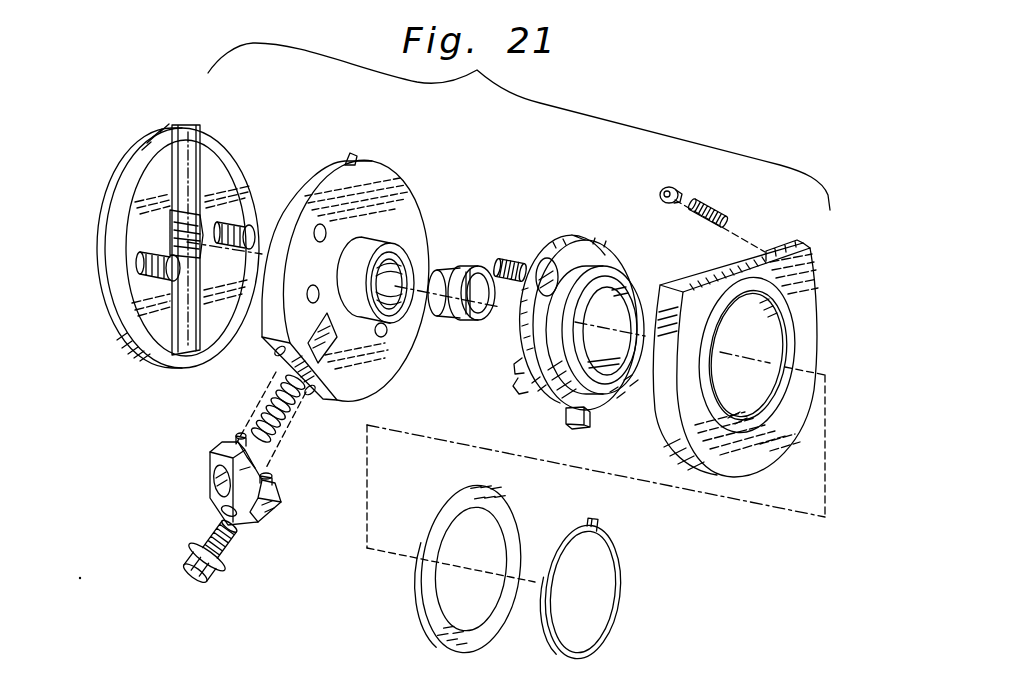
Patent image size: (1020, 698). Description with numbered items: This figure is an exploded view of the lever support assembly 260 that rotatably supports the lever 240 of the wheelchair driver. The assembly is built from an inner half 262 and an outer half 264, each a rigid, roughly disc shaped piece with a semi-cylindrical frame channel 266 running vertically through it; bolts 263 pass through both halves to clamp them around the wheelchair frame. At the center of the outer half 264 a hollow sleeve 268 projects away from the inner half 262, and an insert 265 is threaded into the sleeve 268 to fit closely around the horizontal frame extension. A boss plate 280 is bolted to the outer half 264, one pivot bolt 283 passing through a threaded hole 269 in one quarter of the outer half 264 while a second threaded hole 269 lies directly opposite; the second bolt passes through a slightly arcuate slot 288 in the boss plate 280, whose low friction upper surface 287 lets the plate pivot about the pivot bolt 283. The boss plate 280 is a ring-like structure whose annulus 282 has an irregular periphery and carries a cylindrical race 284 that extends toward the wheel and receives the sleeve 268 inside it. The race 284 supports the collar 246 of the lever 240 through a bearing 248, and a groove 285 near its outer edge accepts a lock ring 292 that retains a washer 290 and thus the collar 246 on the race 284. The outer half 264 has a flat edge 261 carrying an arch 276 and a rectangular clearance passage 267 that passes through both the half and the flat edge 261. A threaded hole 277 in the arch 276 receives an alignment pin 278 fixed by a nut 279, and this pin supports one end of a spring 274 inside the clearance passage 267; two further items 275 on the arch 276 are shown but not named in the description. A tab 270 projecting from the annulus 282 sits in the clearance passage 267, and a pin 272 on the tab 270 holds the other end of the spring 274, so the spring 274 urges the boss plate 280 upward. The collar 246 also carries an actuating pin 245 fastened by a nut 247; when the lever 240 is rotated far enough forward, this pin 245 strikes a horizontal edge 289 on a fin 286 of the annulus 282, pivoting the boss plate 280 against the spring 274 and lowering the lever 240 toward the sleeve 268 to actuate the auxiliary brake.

The lever 240 is at (812, 258).
The actuating pin 245 is at (703, 207).
The collar 246 is at (790, 430).
The nut 247 is at (672, 188).
The bearing 248 is at (792, 336).
The lever support assembly 260 is at (155, 85).
The flat edge 261 is at (273, 357).
The inner half 262 is at (114, 192).
The bolts 263 is at (167, 272).
The outer half 264 is at (387, 160).
The insert 265 is at (458, 272).
The semi-cylindrical frame channel 266 is at (187, 140).
The clearance passage 267 is at (337, 353).
The sleeve 268 is at (370, 258).
The threaded hole 269 is at (318, 232).
The tab 270 is at (518, 366).
The pin 272 is at (525, 388).
The spring 274 is at (286, 432).
The set screw 275 is at (210, 467).
The arch 276 is at (263, 520).
The threaded hole 277 is at (222, 513).
The alignment pin 278 is at (228, 535).
The nut 279 is at (184, 557).
The boss plate 280 is at (590, 262).
The annulus 282 is at (567, 252).
The pivot bolt 283 is at (506, 260).
The cylindrical race 284 is at (608, 262).
The groove 285 is at (537, 400).
The fin 286 is at (613, 398).
The low friction upper surface 287 is at (602, 398).
The slot 288 is at (627, 398).
The edge 289 is at (653, 300).
The washer 290 is at (430, 620).
The lock ring 292 is at (605, 628).